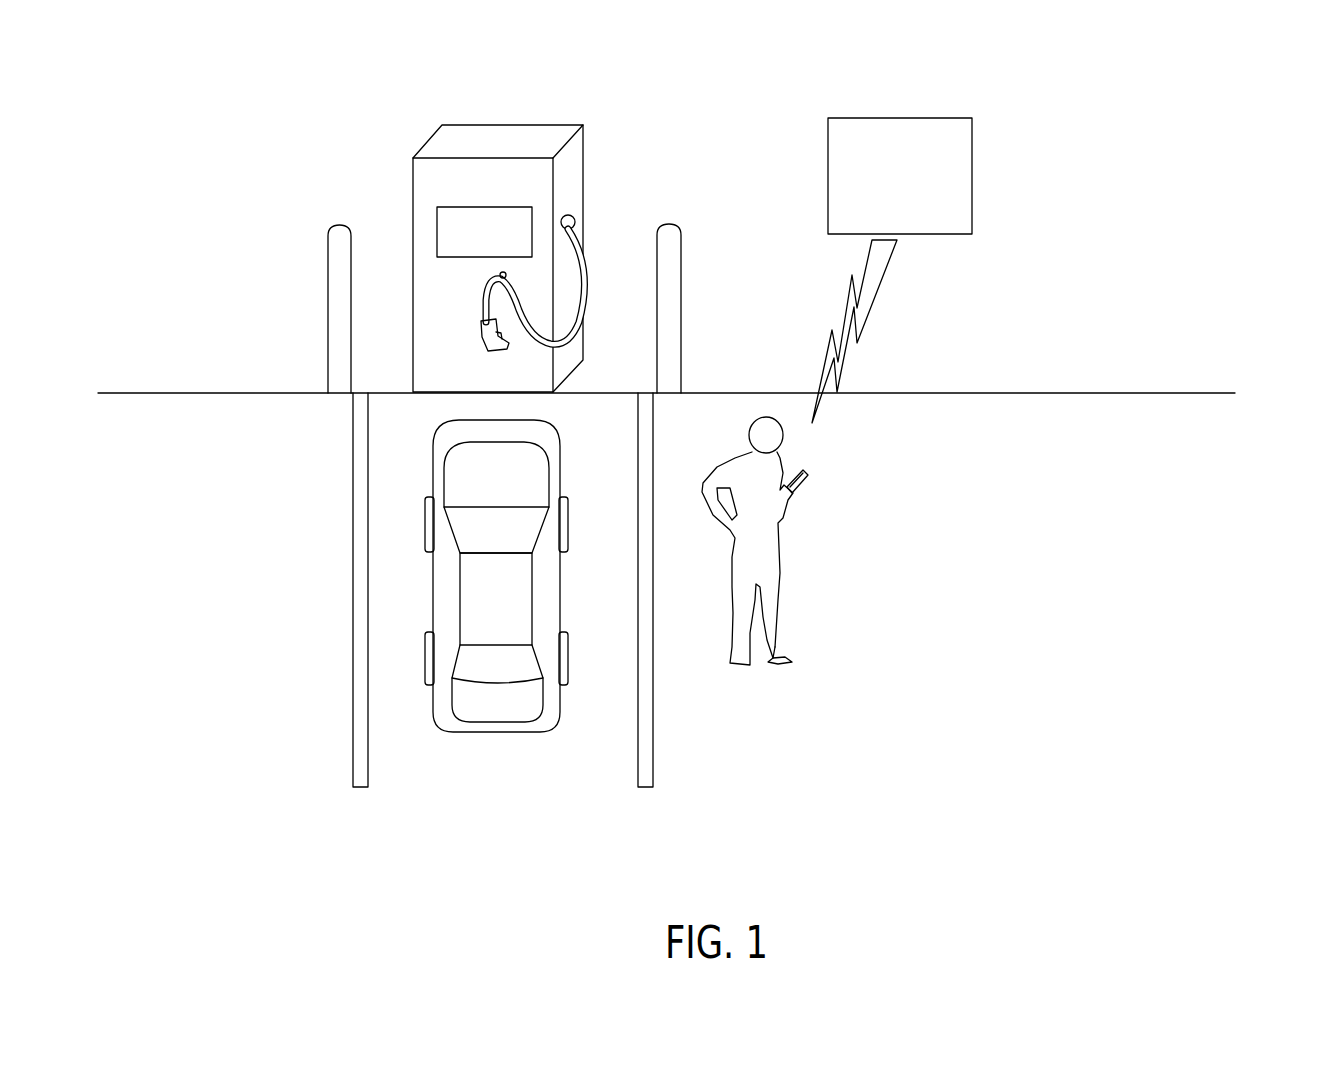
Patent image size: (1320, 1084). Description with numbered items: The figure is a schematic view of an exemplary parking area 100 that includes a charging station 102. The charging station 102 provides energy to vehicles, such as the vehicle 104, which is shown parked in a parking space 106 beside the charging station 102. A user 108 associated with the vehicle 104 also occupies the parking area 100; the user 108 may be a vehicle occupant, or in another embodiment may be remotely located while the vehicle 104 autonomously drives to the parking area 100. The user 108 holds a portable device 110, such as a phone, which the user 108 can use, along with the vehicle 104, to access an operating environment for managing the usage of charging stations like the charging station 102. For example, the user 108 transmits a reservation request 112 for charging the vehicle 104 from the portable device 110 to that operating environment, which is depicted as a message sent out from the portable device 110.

The parking area 100 is at (295, 82).
The charging station 102 is at (516, 152).
The vehicle 104 is at (518, 611).
The parking space 106 is at (643, 798).
The user 108 is at (730, 547).
The portable device 110 is at (802, 471).
The reservation request 112 is at (916, 216).